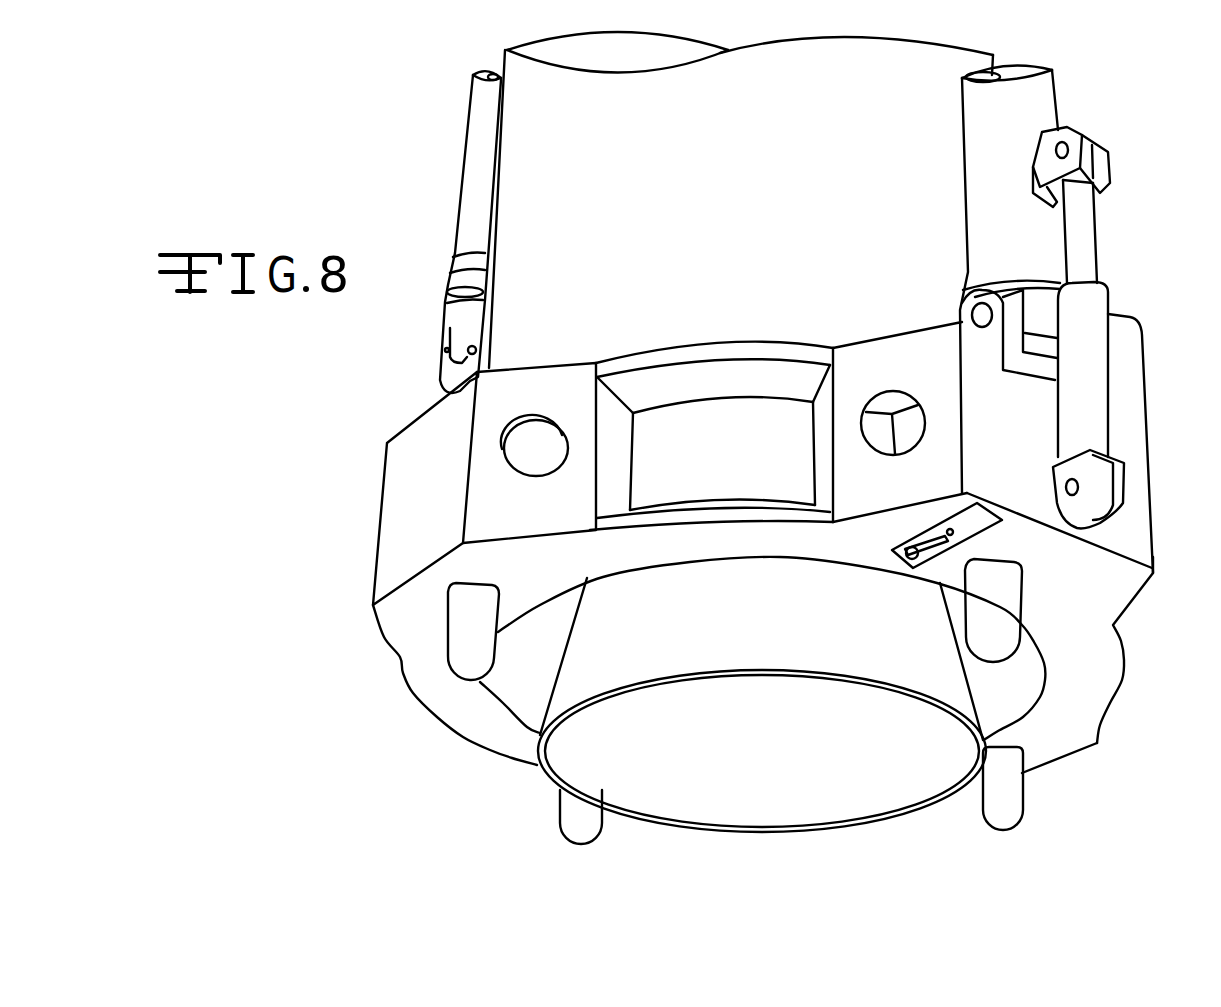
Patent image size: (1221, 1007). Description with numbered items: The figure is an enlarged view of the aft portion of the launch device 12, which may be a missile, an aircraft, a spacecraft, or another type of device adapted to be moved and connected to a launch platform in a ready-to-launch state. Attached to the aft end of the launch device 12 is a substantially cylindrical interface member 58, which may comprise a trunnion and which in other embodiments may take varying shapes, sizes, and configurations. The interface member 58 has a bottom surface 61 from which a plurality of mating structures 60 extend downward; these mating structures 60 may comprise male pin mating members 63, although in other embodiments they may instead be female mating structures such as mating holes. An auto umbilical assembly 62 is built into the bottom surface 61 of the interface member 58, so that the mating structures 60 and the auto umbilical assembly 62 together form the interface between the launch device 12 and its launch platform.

The launch device 12 is at (761, 176).
The interface member 58 is at (1077, 583).
The mating structures 60 is at (457, 657).
The bottom surface 61 is at (1093, 662).
The auto umbilical assembly 62 is at (972, 523).
The male pin mating members 63 is at (583, 827).